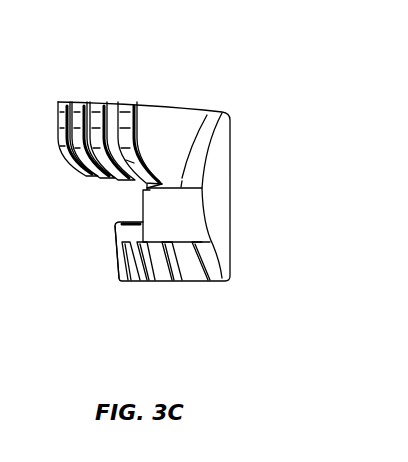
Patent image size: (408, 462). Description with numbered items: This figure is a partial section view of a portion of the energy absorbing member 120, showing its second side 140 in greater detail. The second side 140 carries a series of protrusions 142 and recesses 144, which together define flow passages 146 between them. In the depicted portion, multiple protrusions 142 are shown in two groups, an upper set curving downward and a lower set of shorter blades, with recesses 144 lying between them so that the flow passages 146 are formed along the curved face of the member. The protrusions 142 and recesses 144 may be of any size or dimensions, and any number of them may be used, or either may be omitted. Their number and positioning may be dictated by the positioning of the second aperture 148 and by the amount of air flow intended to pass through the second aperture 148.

The energy absorbing member 120 is at (306, 285).
The second side 140 is at (193, 212).
The protrusions 142 is at (127, 121).
The recesses 144 is at (186, 117).
The flow passages 146 is at (210, 130).
The second aperture 148 is at (107, 205).